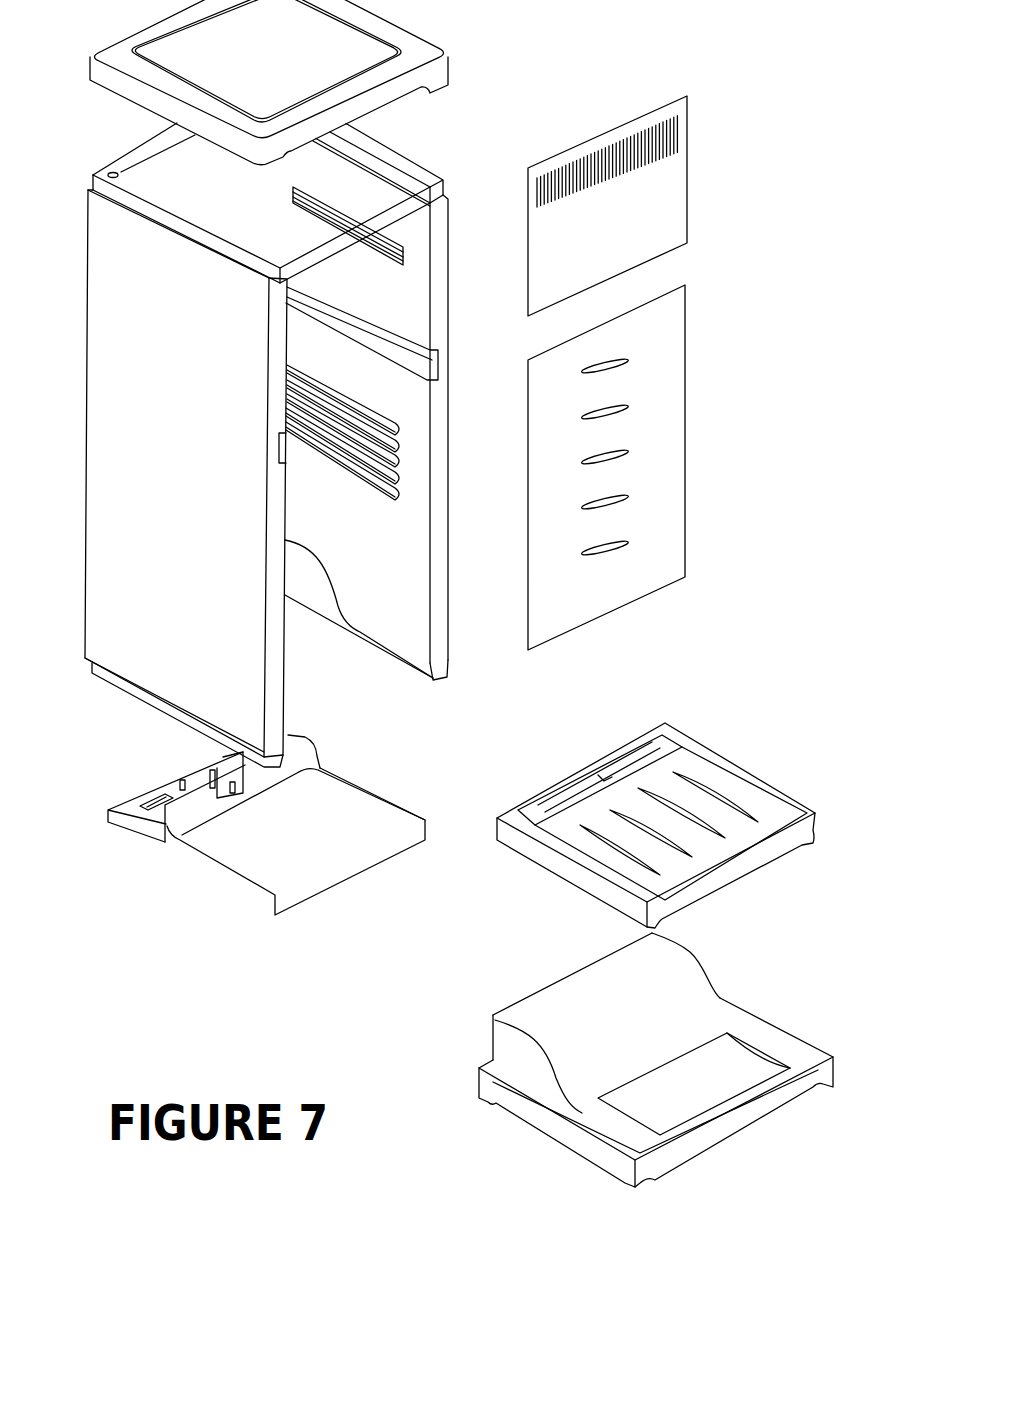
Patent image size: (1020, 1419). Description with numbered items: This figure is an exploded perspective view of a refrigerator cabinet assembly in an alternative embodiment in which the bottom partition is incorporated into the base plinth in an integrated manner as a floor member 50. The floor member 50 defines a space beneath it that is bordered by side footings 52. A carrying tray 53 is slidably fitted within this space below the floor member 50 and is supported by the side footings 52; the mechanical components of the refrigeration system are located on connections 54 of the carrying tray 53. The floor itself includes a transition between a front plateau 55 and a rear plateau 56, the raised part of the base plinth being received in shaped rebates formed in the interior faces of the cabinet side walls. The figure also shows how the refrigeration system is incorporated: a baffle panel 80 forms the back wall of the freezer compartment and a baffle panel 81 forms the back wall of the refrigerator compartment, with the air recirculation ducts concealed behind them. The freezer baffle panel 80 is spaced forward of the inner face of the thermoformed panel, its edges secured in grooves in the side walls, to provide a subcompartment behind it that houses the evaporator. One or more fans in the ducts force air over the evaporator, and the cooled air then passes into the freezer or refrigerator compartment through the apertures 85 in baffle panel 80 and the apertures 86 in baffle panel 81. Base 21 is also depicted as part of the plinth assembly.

The base 21 is at (633, 1093).
The floor member 50 is at (637, 1053).
The side footings 52 is at (777, 1022).
The carrying tray 53 is at (258, 827).
The connections 54 is at (193, 777).
The front plateau 55 is at (652, 1102).
The rear plateau 56 is at (555, 1017).
The baffle panel 80 is at (644, 188).
The baffle panel 81 is at (649, 467).
The apertures 85 is at (667, 142).
The apertures 86 is at (613, 412).